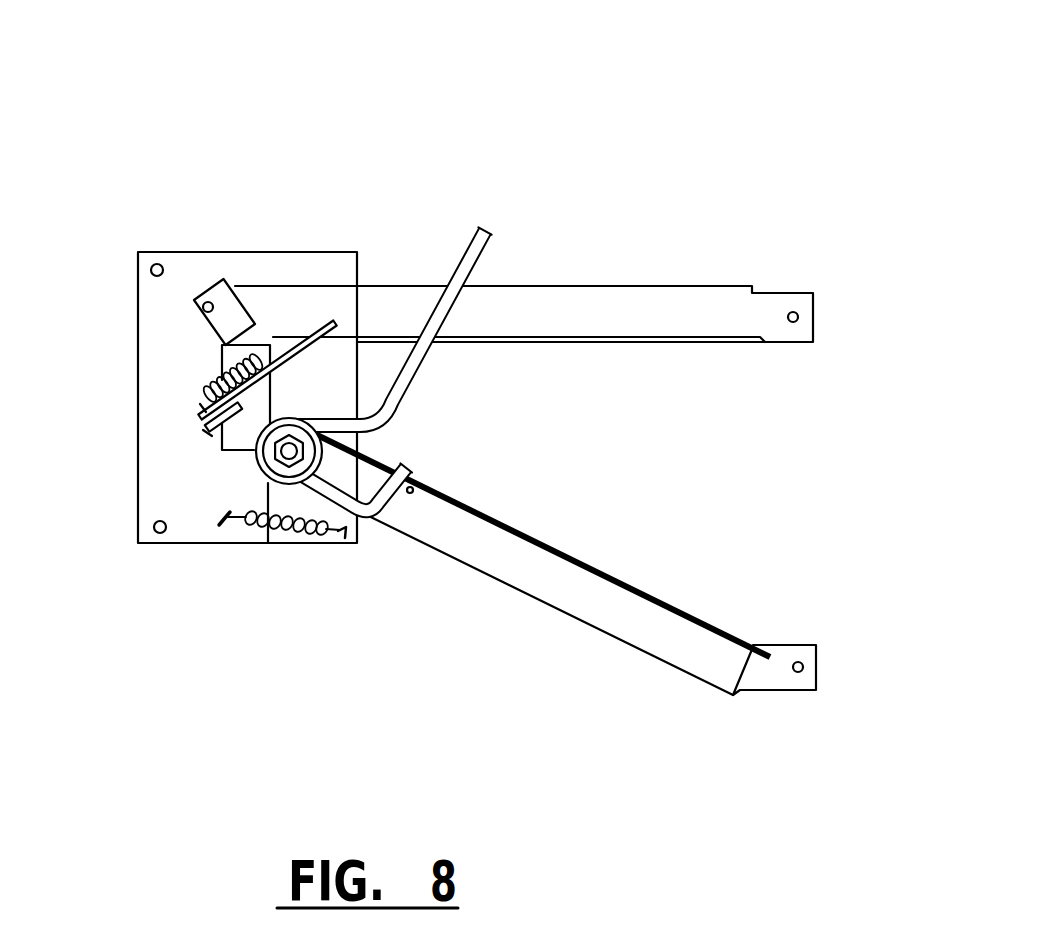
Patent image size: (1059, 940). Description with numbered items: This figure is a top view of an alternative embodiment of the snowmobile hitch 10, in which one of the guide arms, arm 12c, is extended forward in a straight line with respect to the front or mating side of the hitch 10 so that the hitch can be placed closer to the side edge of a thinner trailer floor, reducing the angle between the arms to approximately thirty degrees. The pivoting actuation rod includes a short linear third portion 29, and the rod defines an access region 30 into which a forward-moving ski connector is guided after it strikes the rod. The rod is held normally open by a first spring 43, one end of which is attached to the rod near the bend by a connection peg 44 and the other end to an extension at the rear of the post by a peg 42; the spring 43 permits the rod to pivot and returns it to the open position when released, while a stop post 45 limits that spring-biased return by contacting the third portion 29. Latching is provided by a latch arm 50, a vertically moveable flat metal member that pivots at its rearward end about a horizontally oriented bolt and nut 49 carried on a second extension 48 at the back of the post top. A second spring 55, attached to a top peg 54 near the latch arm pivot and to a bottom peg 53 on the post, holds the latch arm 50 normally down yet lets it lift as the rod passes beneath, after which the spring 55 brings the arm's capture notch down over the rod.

The snowmobile hitch 10 is at (85, 125).
The arm 12c is at (666, 262).
The third portion 29 is at (383, 507).
The access region 30 is at (430, 443).
The peg 42 is at (223, 518).
The first spring 43 is at (273, 530).
The connection peg 44 is at (342, 531).
The stop post 45 is at (413, 500).
The second extension 48 is at (203, 430).
The bolt and nut 49 is at (138, 389).
The latch arm 50 is at (320, 332).
The bottom peg 53 is at (206, 404).
The top peg 54 is at (258, 348).
The second spring 55 is at (217, 384).